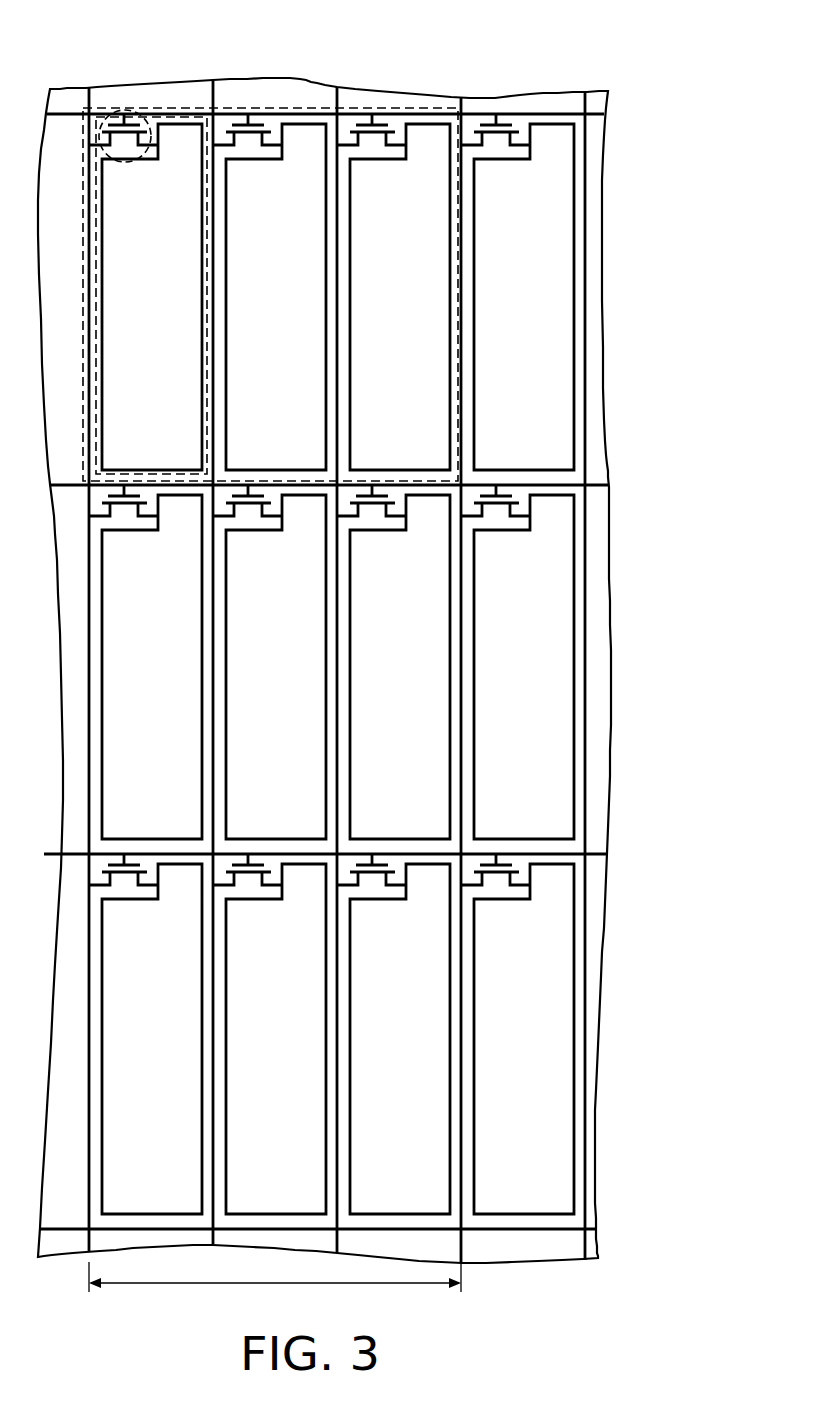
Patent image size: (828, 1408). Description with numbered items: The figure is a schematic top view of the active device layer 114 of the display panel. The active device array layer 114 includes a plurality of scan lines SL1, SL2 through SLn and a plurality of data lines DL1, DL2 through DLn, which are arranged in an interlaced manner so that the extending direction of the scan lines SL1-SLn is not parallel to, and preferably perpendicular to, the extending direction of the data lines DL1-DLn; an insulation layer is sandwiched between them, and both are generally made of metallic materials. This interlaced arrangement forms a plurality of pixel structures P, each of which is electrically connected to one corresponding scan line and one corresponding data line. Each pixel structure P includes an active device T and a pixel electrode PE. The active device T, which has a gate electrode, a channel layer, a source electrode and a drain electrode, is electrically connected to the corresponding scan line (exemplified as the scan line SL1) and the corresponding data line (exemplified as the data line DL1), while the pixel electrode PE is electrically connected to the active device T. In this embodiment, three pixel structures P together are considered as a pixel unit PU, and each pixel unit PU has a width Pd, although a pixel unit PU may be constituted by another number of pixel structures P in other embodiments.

The active device layer 114 is at (703, 1303).
The data line DL1 is at (88, 104).
The data line DL2 is at (214, 100).
The data line DLn is at (584, 102).
The scan line SL1 is at (592, 113).
The scan line SL2 is at (597, 484).
The scan line SLn is at (594, 1227).
The active device T is at (147, 113).
The pixel electrode PE is at (192, 143).
The pixel structure P is at (178, 116).
The pixel unit PU is at (396, 107).
The width of pixel unit Pd is at (275, 1291).